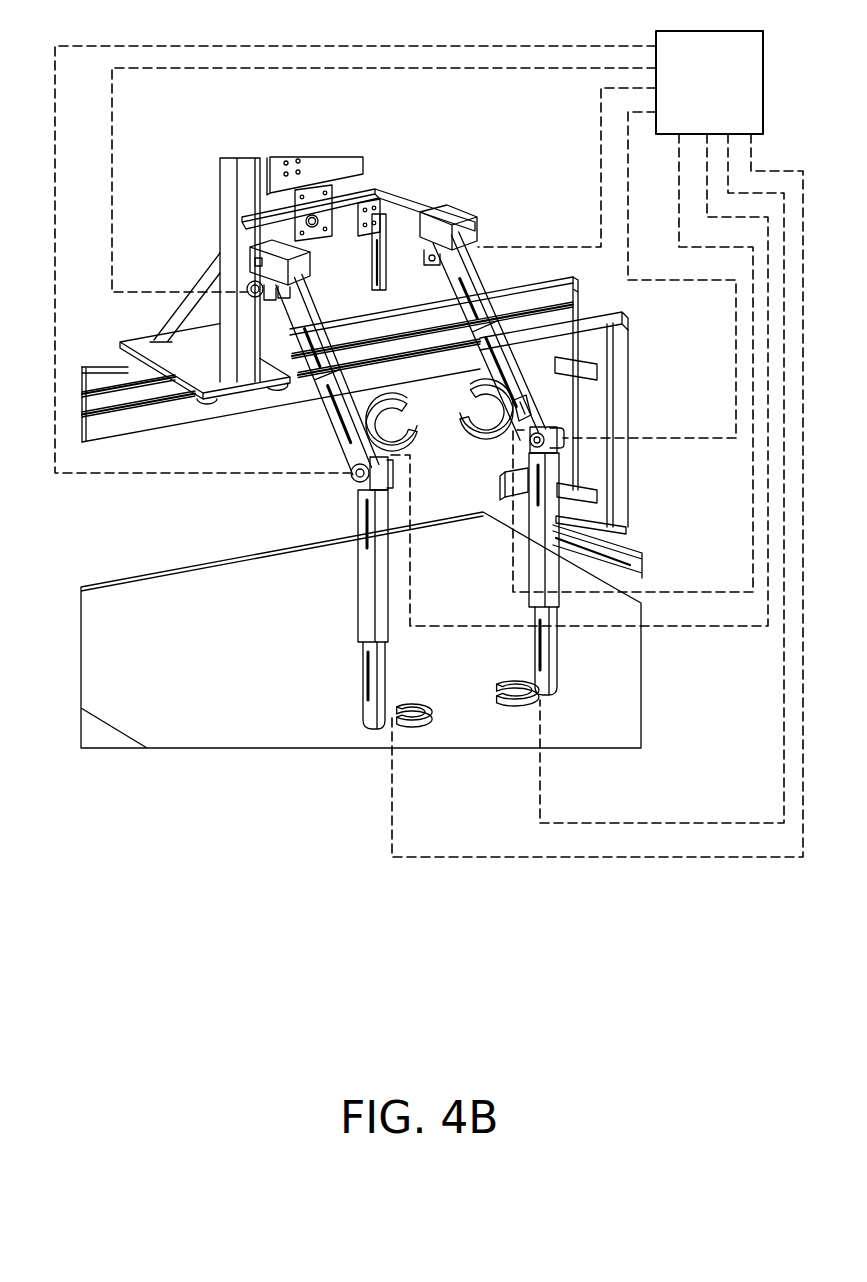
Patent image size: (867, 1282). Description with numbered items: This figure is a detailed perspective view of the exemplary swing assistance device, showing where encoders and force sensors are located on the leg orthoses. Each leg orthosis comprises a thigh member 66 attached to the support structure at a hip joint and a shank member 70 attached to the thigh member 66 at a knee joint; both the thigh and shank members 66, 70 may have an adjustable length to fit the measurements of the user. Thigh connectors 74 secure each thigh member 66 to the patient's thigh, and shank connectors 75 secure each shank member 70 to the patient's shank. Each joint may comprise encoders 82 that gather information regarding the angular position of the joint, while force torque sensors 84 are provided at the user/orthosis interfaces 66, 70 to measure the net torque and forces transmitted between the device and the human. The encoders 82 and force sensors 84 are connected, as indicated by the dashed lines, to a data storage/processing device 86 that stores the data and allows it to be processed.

The thigh member 66 is at (336, 435).
The shank member 70 is at (357, 598).
The thigh connector 74 is at (505, 418).
The shank connector 75 is at (520, 703).
The encoder 82 is at (478, 247).
The force torque sensor 84 is at (518, 412).
The data storage/processing device 86 is at (709, 82).